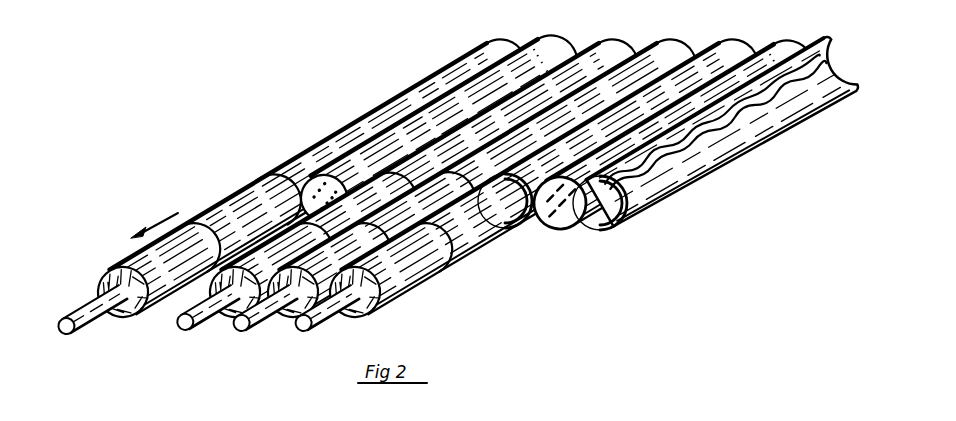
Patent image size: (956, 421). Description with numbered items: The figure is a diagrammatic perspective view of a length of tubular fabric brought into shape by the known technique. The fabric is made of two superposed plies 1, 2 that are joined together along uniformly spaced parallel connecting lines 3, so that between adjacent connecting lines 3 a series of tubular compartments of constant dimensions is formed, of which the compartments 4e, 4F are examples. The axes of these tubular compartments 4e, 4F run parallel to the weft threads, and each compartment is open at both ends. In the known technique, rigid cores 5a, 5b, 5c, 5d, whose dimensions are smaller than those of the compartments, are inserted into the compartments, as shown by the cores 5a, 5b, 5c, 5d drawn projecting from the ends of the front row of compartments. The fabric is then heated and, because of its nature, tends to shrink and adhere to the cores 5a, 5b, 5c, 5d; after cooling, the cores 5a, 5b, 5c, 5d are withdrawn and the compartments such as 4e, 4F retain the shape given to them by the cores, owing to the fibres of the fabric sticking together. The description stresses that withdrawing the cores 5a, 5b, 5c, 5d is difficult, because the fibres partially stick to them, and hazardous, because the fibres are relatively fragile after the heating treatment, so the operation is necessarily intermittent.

The ply 1 is at (732, 159).
The ply 2 is at (622, 180).
The connecting line 3 is at (522, 226).
The tubular compartment 4e is at (313, 198).
The tubular compartment 4F is at (559, 215).
The rigid core 5a is at (398, 284).
The rigid core 5b is at (282, 319).
The rigid core 5c is at (223, 318).
The rigid core 5d is at (291, 199).